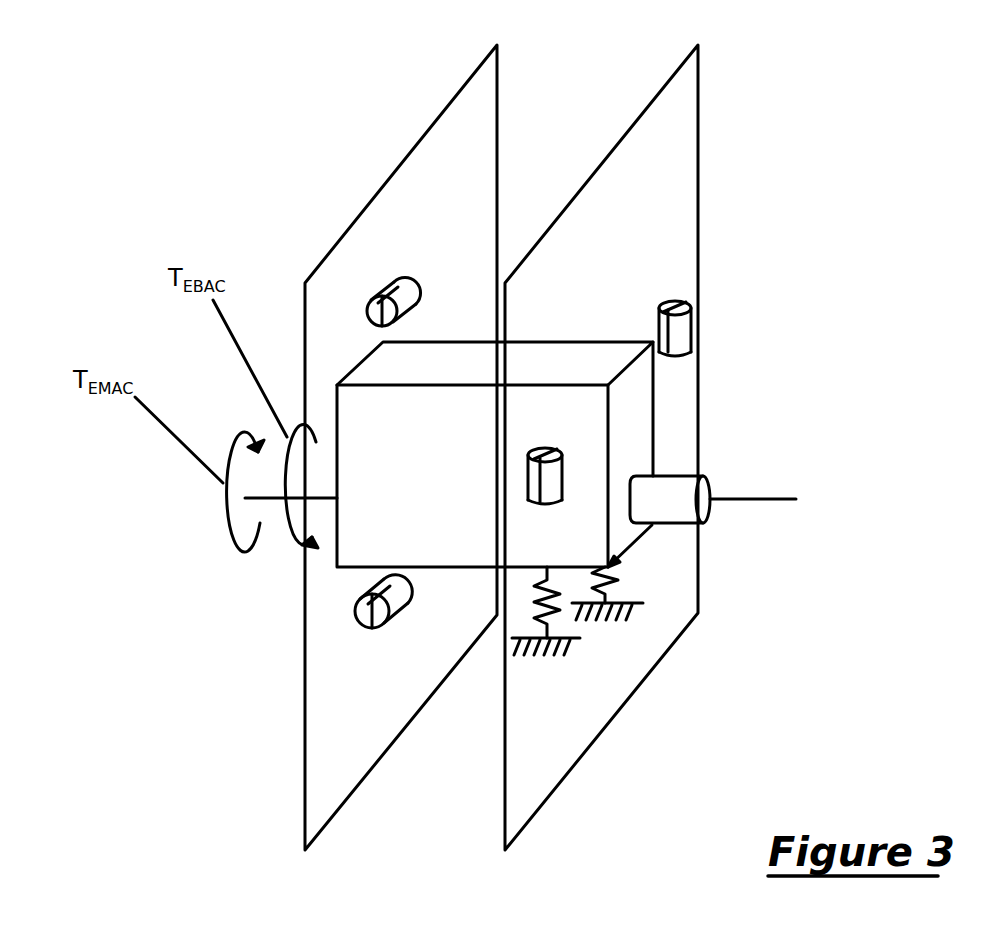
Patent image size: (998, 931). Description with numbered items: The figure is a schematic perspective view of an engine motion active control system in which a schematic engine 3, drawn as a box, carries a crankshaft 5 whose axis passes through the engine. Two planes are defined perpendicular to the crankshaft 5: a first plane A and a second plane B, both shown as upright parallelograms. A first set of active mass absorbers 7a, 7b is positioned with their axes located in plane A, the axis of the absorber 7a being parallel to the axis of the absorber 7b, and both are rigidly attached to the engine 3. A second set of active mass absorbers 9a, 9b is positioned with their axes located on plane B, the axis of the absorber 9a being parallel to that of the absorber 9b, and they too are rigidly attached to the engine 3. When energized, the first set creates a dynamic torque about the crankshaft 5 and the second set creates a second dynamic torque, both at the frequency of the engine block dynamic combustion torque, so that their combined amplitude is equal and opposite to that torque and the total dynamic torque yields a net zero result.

The engine 3 is at (345, 568).
The crankshaft 5 is at (712, 508).
The active mass absorber 7a is at (692, 328).
The active mass absorber 7b is at (562, 488).
The active mass absorber 9a is at (388, 293).
The active mass absorber 9b is at (397, 608).
The plane A is at (700, 89).
The plane B is at (500, 58).